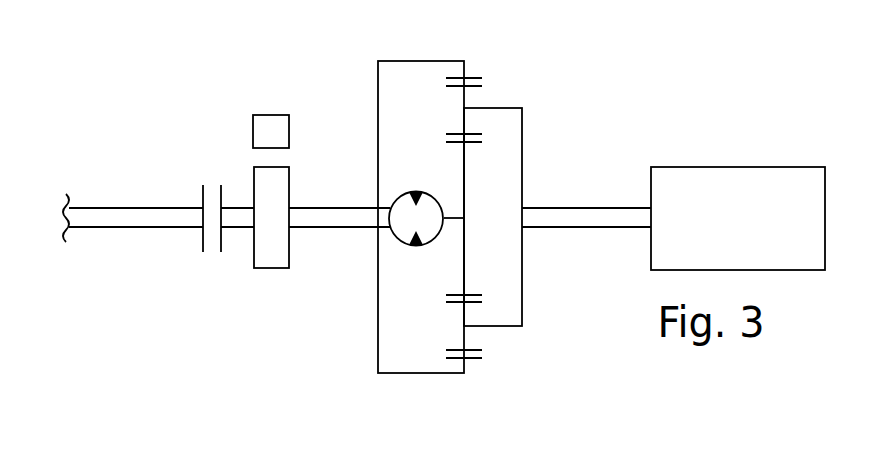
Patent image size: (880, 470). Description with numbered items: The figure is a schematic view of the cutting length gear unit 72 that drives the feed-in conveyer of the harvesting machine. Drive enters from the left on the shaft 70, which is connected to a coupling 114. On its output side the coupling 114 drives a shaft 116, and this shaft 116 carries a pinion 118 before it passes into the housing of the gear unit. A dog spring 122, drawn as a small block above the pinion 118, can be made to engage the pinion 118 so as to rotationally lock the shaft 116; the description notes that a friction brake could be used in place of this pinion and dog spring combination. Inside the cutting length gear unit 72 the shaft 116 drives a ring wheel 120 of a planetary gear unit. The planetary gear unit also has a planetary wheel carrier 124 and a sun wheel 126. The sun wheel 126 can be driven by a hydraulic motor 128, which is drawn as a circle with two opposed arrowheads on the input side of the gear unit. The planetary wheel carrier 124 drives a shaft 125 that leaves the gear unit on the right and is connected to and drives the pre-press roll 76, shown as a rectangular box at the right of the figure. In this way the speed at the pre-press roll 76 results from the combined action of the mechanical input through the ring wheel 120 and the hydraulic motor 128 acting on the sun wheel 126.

The shaft 70 is at (128, 222).
The coupling 114 is at (213, 190).
The shaft 116 is at (242, 228).
The pinion 118 is at (270, 255).
The dog spring 122 is at (272, 123).
The cutting length gear unit 72 is at (510, 338).
The ring wheel 120 is at (468, 68).
The planetary wheel carrier 124 is at (483, 99).
The sun wheel 126 is at (463, 257).
The hydraulic motor 128 is at (400, 192).
The shaft 125 is at (583, 213).
The pre-press roll 76 is at (753, 177).